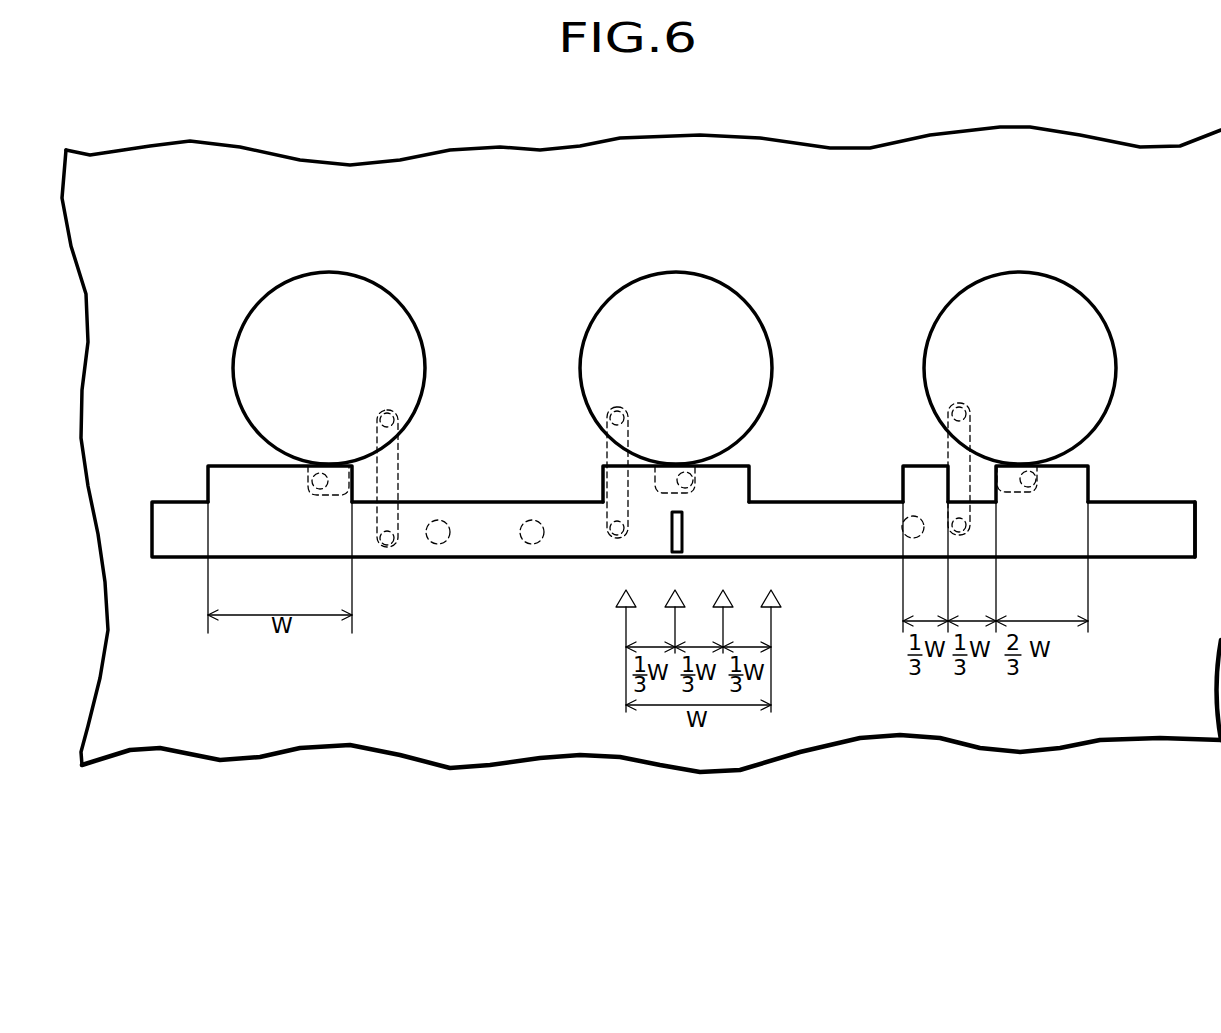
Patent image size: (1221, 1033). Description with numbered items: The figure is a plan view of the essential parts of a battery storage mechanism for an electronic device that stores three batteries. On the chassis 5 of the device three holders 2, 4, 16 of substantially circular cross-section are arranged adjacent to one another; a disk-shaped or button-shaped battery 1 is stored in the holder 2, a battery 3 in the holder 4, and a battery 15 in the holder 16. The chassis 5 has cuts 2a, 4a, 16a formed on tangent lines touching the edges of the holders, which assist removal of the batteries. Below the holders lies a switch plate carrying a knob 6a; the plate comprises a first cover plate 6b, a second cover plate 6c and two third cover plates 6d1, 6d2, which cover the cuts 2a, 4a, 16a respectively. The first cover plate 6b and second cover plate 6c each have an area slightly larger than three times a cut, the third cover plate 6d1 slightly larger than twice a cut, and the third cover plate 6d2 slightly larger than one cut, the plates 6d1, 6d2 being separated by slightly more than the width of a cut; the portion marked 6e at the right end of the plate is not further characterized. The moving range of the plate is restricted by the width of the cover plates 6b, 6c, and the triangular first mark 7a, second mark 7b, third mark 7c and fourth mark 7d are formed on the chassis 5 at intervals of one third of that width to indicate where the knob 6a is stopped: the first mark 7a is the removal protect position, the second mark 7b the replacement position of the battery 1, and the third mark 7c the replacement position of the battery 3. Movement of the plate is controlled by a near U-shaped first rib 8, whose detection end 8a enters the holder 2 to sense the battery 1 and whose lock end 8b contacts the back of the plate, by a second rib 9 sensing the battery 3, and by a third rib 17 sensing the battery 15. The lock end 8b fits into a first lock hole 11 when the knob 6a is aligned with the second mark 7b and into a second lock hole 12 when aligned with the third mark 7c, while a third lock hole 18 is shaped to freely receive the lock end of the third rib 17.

The battery 1 is at (360, 308).
The holder 2 is at (408, 327).
The battery 3 is at (692, 295).
The holder 4 is at (737, 303).
The chassis 5 is at (833, 155).
The knob 6a is at (682, 532).
The first cover plate 6b is at (226, 480).
The second cover plate 6c is at (749, 468).
The third cover plate 6d1 is at (1077, 472).
The third cover plate 6d2 is at (912, 487).
The base end 6e is at (1133, 545).
The first mark 7a is at (678, 592).
The second mark 7b is at (620, 595).
The third mark 7c is at (730, 607).
The fourth mark 7d is at (780, 600).
The first rib 8 is at (400, 465).
The detection end 8a is at (397, 408).
The lock end 8b is at (387, 545).
The second rib 9 is at (603, 477).
The first lock hole 11 is at (443, 544).
The second lock hole 12 is at (536, 544).
The battery 15 is at (1037, 297).
The holder 16 is at (1103, 331).
The cut 16a is at (1033, 478).
The third rib 17 is at (935, 458).
The third lock hole 18 is at (917, 545).
The cut 2a is at (315, 495).
The cut 4a is at (693, 488).